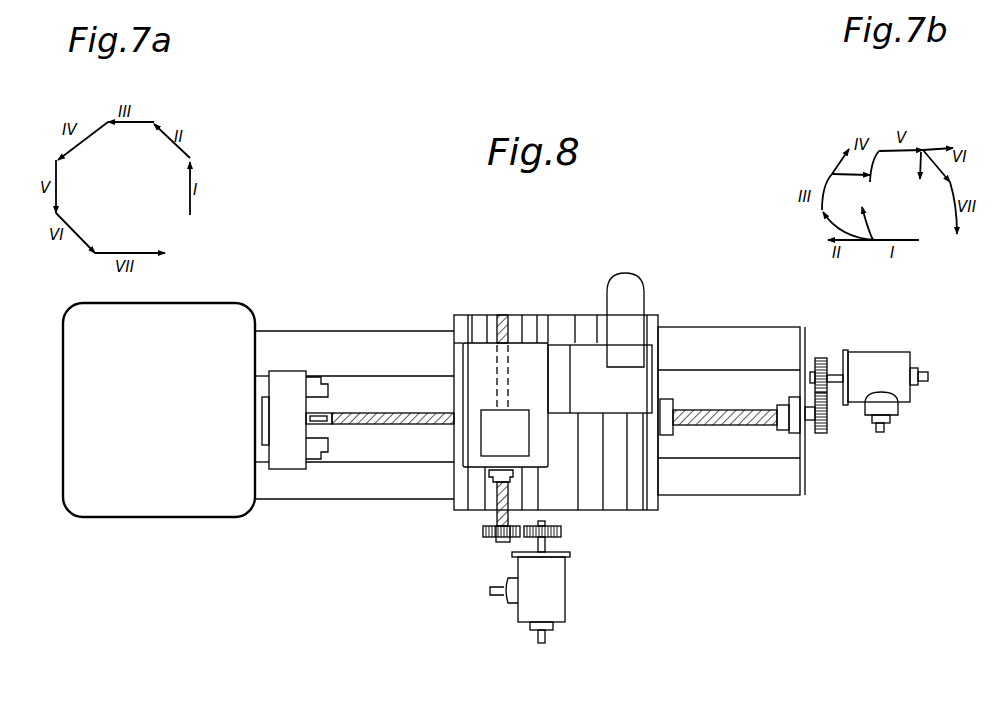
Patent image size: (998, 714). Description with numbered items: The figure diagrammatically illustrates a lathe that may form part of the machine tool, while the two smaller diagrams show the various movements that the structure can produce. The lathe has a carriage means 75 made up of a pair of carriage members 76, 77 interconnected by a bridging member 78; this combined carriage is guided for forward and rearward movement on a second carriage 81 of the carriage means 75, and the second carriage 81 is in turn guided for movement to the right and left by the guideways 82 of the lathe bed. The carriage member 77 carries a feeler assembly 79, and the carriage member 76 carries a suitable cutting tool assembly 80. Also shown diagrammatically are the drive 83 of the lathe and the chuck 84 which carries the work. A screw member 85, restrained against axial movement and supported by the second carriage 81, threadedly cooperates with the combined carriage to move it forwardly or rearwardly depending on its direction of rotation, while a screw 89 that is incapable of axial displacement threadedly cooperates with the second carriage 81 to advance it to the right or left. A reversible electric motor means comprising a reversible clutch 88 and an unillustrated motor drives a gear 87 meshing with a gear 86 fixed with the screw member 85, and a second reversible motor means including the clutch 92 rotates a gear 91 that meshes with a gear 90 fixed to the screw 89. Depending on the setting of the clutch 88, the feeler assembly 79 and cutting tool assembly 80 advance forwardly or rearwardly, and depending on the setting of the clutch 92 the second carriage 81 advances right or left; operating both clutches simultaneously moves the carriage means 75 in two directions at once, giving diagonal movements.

The carriage means 75 is at (450, 506).
The carriage member 76 is at (530, 389).
The carriage member 77 is at (645, 372).
The bridging member 78 is at (558, 349).
The feeler assembly 79 is at (640, 292).
The cutting tool assembly 80 is at (480, 441).
The second carriage 81 is at (565, 492).
The guideways 82 is at (752, 490).
The drive 83 is at (82, 404).
The chuck 84 is at (280, 377).
The screw member 85 is at (500, 315).
The gear 86 is at (484, 538).
The gear 87 is at (562, 530).
The reversible clutch 88 is at (565, 598).
The screw 89 is at (731, 410).
The gear 90 is at (822, 433).
The gear 91 is at (822, 358).
The clutch 92 is at (895, 360).